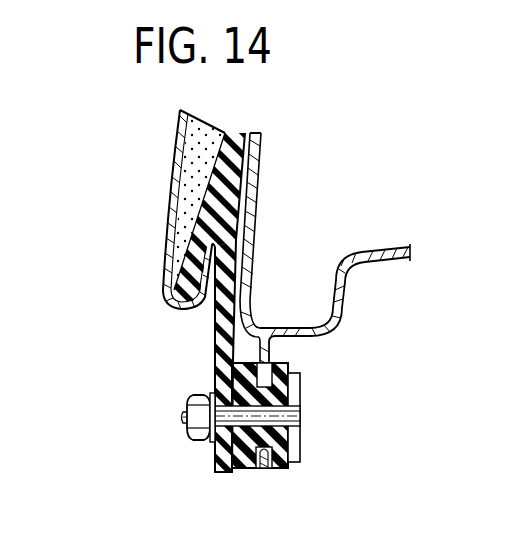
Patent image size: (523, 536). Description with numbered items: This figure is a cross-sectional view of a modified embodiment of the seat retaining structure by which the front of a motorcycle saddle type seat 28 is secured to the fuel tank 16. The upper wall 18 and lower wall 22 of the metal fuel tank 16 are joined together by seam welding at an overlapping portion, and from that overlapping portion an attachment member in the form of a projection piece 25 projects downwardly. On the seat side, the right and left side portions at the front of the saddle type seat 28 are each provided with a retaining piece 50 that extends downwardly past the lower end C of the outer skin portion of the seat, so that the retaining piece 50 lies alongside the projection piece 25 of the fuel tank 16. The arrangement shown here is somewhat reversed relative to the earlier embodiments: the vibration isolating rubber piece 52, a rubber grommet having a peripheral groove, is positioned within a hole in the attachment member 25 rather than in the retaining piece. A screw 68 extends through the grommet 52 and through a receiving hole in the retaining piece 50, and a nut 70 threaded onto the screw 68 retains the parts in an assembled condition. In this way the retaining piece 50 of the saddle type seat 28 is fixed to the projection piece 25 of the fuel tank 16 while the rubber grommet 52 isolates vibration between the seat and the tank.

The fuel tank 16 is at (360, 169).
The upper wall 18 is at (262, 212).
The lower wall 22 is at (343, 290).
The projection piece 25 is at (267, 469).
The saddle type seat 28 is at (158, 160).
The retaining piece 50 is at (215, 467).
The vibration isolating rubber piece 52 is at (240, 470).
The screw 68 is at (183, 414).
The nut 70 is at (190, 420).
The lower end of the outer skin portion C is at (171, 323).